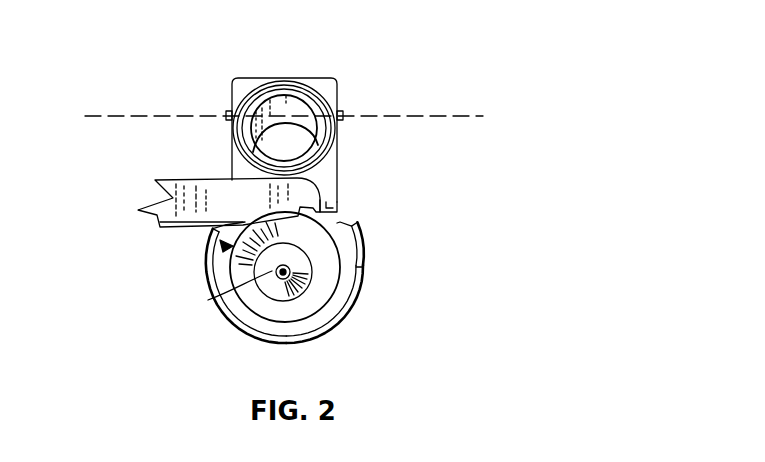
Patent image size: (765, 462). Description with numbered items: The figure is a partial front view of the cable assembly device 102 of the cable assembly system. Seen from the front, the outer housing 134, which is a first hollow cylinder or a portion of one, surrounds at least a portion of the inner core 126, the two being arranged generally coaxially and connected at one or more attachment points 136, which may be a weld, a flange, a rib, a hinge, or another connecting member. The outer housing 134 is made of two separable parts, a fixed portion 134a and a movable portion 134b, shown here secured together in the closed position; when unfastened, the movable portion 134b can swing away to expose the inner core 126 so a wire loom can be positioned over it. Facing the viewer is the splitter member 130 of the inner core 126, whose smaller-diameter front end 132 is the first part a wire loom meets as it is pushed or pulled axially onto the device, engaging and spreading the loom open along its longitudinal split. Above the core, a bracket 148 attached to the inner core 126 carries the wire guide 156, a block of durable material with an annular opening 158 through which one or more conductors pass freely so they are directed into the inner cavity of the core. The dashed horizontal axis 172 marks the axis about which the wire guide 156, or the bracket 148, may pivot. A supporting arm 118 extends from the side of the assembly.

The cable assembly device 102 is at (480, 195).
The support arm 118 is at (258, 208).
The inner core 126 is at (218, 243).
The splitter member 130 is at (320, 295).
The front end 132 is at (220, 291).
The outer housing 134 is at (367, 282).
The fixed portion 134a is at (367, 252).
The movable portion 134b is at (363, 291).
The attachment points 136 is at (337, 223).
The bracket 148 is at (338, 98).
The wire guide 156 is at (303, 78).
The annular opening 158 is at (252, 157).
The horizontal axis 172 is at (456, 115).